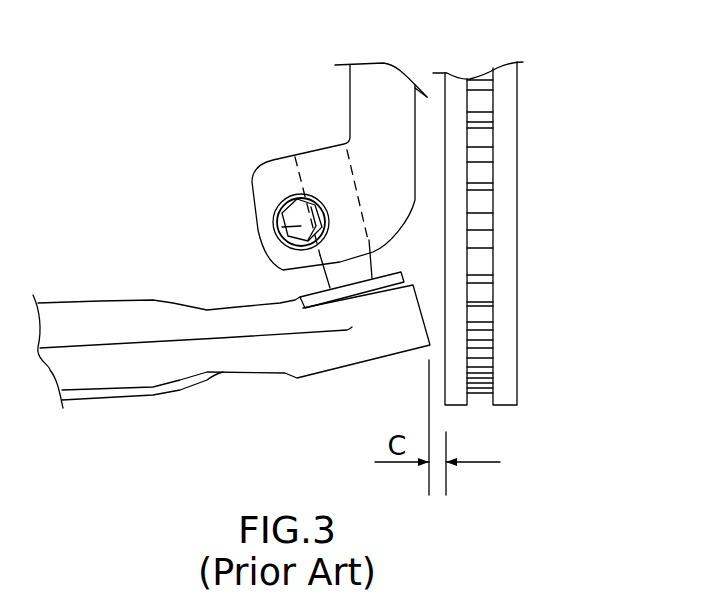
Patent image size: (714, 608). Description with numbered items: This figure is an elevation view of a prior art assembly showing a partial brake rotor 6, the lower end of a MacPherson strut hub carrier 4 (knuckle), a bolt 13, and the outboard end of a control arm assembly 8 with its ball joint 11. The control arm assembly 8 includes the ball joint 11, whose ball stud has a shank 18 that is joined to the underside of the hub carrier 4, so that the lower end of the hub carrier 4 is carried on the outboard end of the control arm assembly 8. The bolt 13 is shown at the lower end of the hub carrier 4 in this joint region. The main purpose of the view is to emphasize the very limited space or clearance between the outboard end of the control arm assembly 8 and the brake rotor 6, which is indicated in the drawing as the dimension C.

The hub carrier 4 is at (328, 150).
The brake rotor 6 is at (517, 205).
The control arm assembly 8 is at (165, 393).
The ball joint 11 is at (290, 289).
The bolt 13 is at (274, 225).
The shank 18 is at (354, 177).